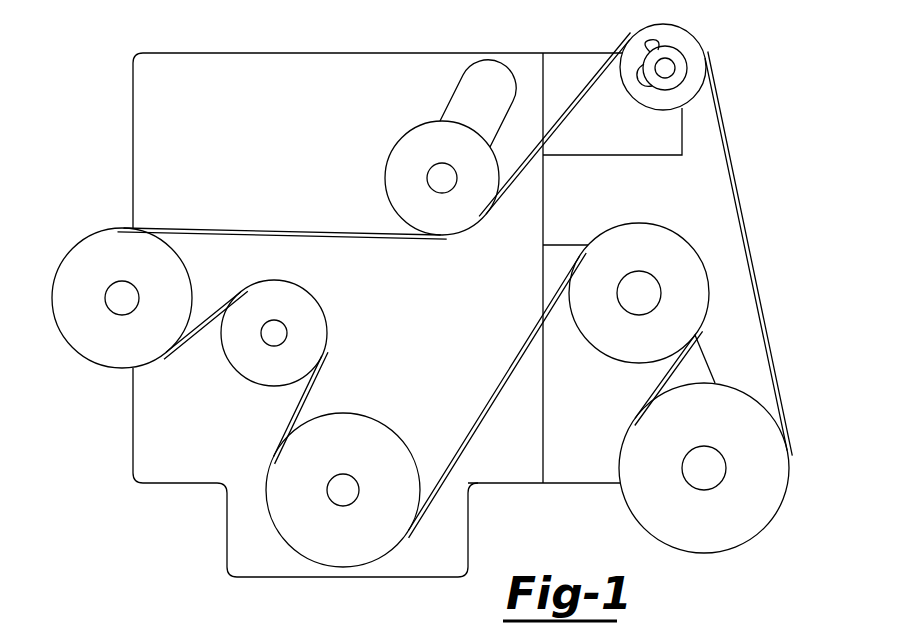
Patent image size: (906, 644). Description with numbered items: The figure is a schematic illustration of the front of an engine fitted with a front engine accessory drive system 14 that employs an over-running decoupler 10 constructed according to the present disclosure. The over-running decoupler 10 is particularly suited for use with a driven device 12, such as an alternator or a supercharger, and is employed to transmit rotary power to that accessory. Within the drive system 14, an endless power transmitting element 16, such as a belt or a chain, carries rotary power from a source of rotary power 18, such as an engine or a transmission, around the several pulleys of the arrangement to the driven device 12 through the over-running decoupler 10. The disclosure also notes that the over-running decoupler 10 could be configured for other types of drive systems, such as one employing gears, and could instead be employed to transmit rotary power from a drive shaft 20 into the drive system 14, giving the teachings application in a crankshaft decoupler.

The over-running decoupler 10 is at (680, 78).
The driven device 12 is at (672, 37).
The drive system 14 is at (124, 418).
The endless power transmitting element 16 is at (257, 228).
The source of rotary power 18 is at (250, 520).
The drive shaft 20 is at (343, 492).